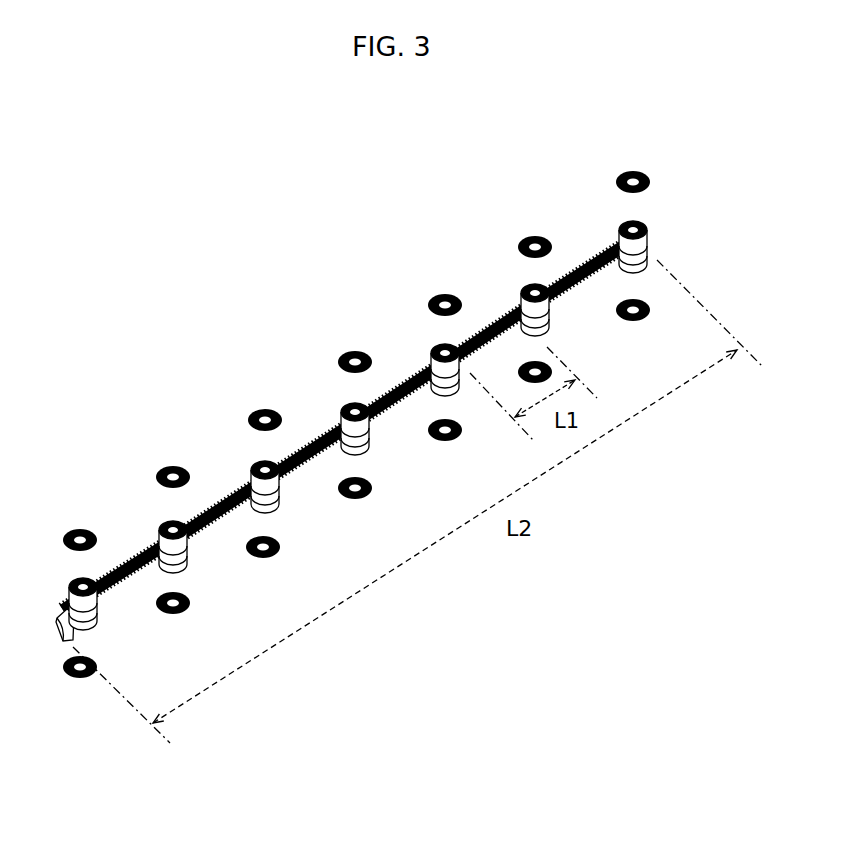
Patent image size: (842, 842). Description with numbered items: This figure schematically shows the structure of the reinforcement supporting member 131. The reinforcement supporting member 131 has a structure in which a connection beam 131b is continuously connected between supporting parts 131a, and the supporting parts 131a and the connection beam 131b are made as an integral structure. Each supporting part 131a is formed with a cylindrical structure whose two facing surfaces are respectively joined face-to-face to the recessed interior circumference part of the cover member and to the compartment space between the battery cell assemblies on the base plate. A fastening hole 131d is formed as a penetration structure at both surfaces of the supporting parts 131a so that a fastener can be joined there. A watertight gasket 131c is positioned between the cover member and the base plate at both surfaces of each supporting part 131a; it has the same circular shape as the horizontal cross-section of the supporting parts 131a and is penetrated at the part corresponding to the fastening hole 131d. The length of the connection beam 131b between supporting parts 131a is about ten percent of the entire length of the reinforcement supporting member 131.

The reinforcement supporting member 131 is at (199, 232).
The supporting part 131a is at (250, 460).
The connection beam 131b is at (320, 432).
The watertight gasket 131c is at (350, 352).
The fastening hole 131d is at (530, 287).